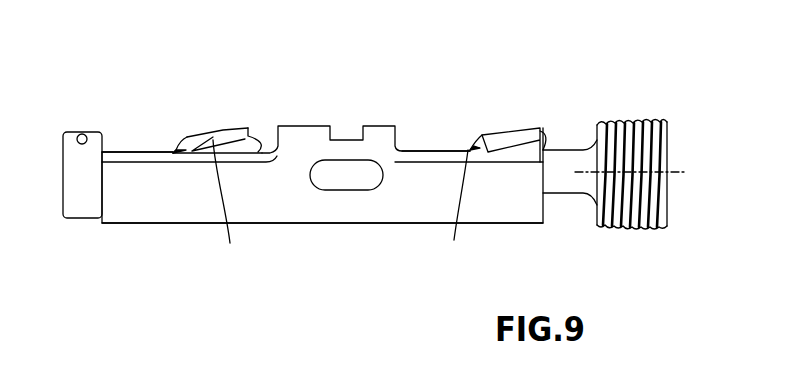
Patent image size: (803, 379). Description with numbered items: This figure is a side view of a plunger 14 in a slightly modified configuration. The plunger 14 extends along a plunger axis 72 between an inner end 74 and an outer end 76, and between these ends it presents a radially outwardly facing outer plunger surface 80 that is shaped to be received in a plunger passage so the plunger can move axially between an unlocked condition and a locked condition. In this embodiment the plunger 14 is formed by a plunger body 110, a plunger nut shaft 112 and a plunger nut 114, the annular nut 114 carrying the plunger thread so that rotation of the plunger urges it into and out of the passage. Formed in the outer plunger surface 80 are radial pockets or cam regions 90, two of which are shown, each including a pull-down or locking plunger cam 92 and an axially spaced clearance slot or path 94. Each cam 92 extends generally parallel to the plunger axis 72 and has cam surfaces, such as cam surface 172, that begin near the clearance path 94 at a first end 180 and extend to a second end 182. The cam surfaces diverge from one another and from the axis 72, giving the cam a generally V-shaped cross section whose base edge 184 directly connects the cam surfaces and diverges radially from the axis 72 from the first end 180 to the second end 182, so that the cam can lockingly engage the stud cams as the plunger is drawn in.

The plunger 14 is at (590, 61).
The inner end 74 is at (63, 202).
The outer plunger surface 80 is at (390, 198).
The plunger body 110 is at (507, 222).
The cam region 90 is at (378, 103).
The first end 180 is at (187, 138).
The locking plunger cam 92 is at (229, 129).
The base edge 184 is at (501, 130).
The second end 182 is at (251, 129).
The clearance slot or path 94 is at (133, 150).
The cam surface 172 is at (340, 202).
The plunger nut shaft 112 is at (568, 195).
The plunger nut 114 is at (645, 187).
The outer end 76 is at (663, 134).
The plunger axis 72 is at (678, 173).